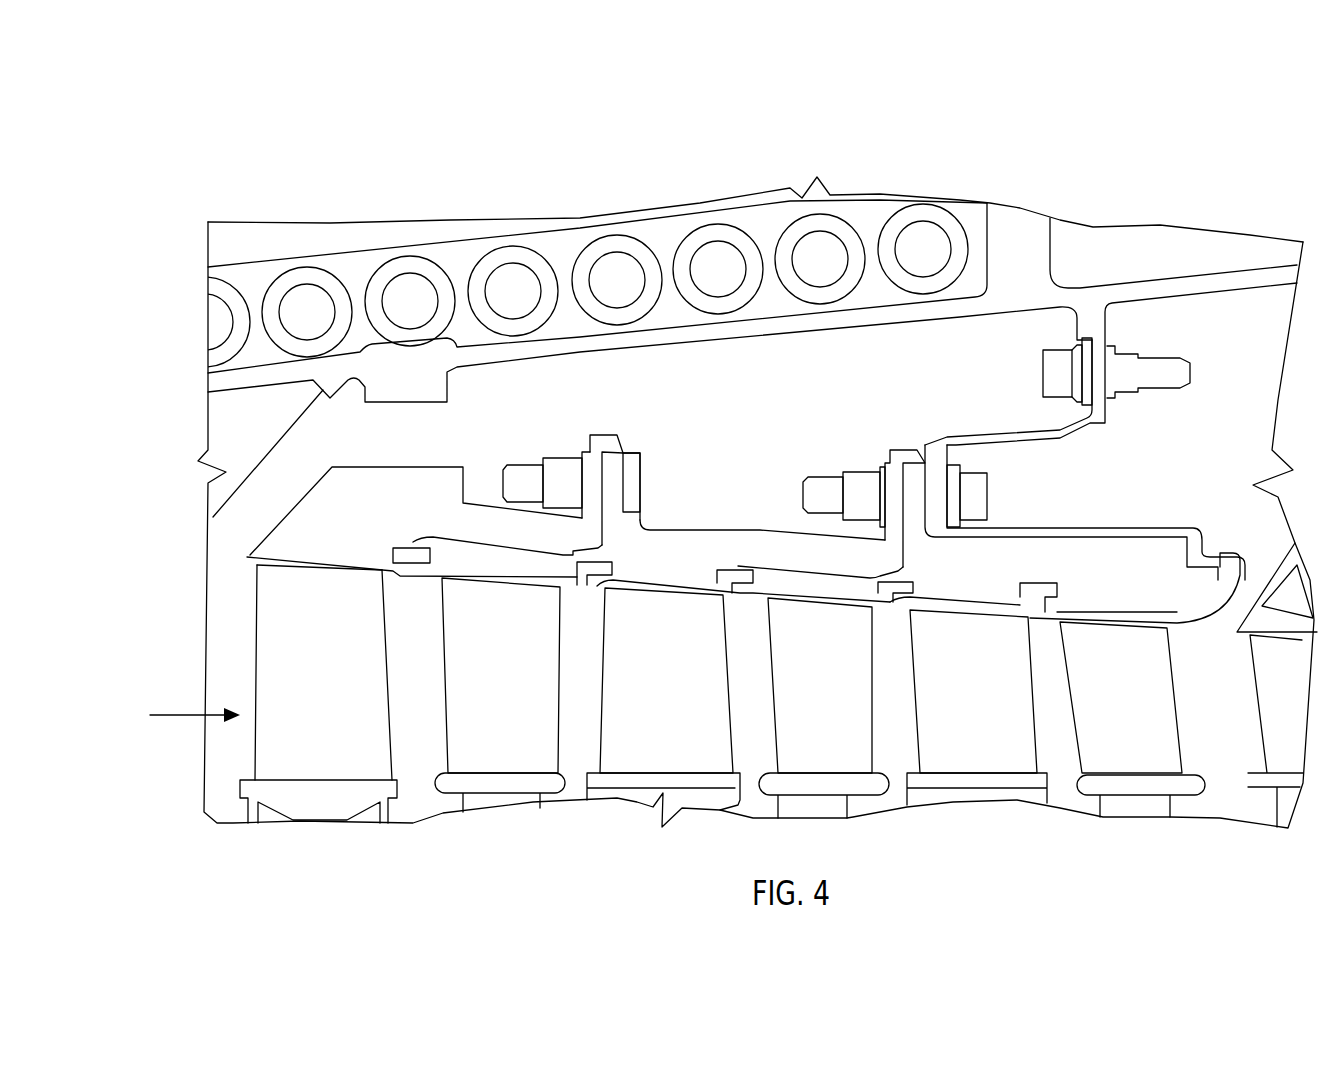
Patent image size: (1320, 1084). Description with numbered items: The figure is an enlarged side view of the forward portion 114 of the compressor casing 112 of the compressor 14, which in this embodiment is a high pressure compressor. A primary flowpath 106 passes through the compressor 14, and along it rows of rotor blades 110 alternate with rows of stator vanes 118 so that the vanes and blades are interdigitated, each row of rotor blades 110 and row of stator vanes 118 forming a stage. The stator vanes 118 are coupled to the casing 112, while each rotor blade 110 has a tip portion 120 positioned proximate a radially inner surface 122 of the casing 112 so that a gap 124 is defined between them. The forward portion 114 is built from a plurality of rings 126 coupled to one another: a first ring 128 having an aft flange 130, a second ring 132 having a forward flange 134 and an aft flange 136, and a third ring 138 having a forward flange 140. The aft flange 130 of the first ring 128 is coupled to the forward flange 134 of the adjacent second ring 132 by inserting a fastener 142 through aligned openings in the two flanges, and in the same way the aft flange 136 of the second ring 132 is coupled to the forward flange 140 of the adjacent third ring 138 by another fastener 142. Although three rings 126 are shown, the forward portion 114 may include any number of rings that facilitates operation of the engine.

The compressor 14 is at (252, 160).
The primary flowpath 106 is at (179, 694).
The rotor blade 110 is at (340, 735).
The compressor casing 112 is at (208, 318).
The forward portion 114 is at (258, 504).
The stator vane 118 is at (515, 735).
The tip portion 120 is at (285, 567).
The radially inner surface 122 is at (410, 577).
The gap 124 is at (253, 564).
The rings 126 is at (493, 522).
The first ring 128 is at (275, 548).
The aft flange 130 is at (590, 455).
The second ring 132 is at (663, 535).
The forward flange 134 is at (612, 453).
The aft flange 136 is at (895, 473).
The third ring 138 is at (1037, 557).
The forward flange 140 is at (917, 468).
The fastener 142 is at (640, 472).